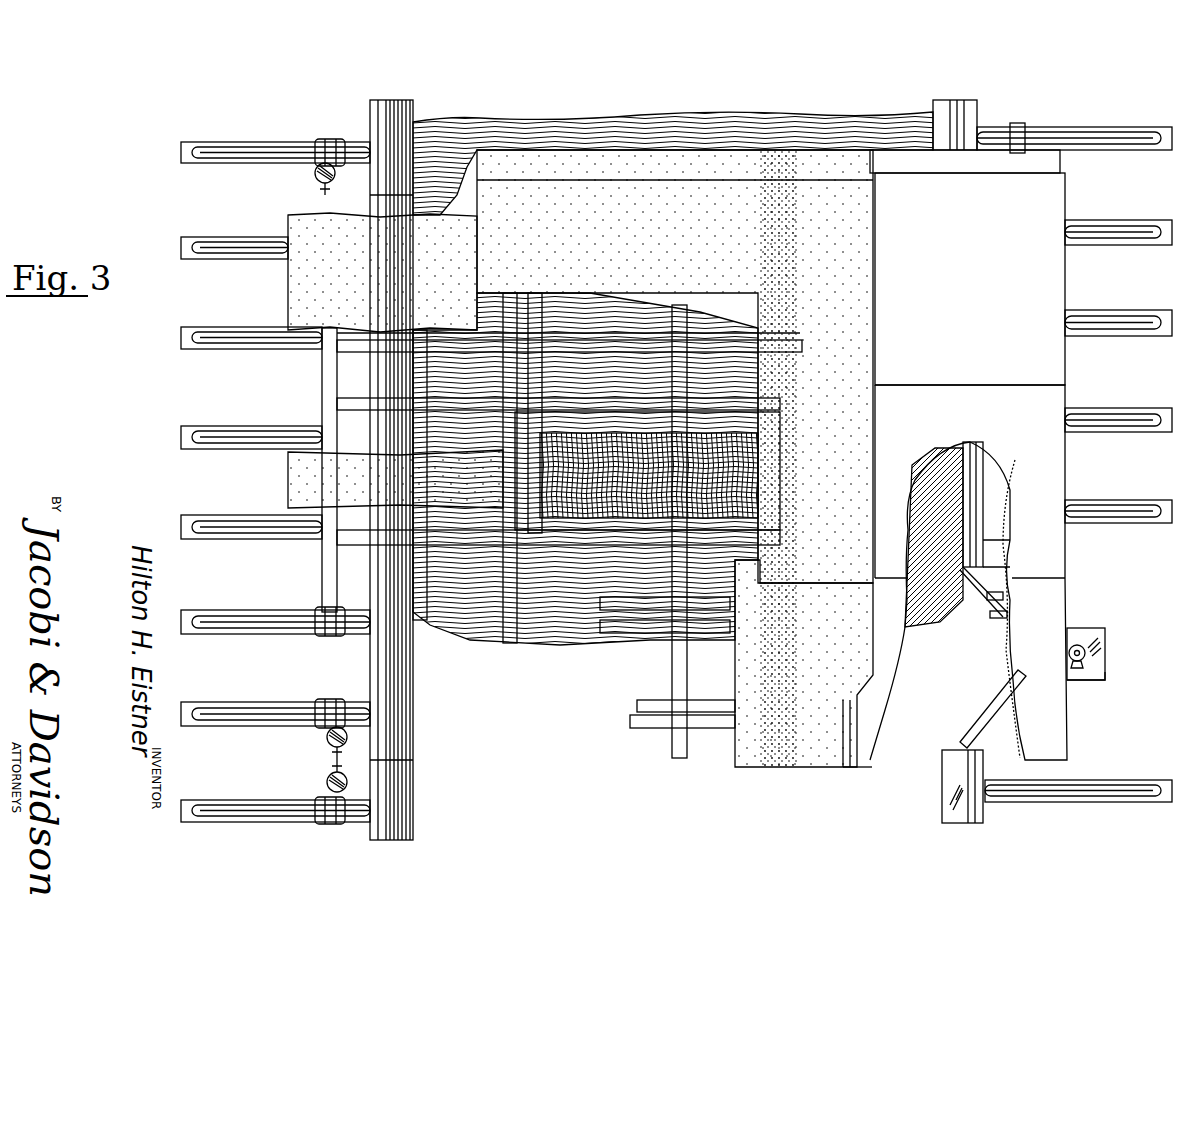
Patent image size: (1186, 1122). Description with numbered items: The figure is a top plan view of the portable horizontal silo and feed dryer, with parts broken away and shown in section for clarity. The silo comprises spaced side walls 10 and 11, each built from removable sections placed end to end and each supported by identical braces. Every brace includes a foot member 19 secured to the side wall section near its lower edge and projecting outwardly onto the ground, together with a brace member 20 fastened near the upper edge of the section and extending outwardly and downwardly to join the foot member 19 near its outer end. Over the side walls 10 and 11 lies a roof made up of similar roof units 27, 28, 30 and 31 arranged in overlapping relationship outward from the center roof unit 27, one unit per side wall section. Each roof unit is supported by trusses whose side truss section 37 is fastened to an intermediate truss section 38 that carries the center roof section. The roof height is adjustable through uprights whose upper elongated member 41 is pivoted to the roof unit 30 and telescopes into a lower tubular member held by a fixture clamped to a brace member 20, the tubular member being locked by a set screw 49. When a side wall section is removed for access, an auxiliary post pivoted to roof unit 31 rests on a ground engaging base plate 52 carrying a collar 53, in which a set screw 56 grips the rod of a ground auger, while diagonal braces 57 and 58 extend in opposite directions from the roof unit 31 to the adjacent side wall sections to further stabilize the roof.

The side wall 10 is at (985, 470).
The side wall 11 is at (372, 658).
The foot member 19 is at (1162, 778).
The brace member 20 is at (1118, 785).
The roof unit 27 is at (1047, 307).
The roof unit 28 is at (893, 160).
The roof unit 30 is at (288, 473).
The roof unit 31 is at (843, 768).
The side truss section 37 is at (440, 347).
The intermediate truss section 38 is at (622, 347).
The upper elongated member 41 is at (327, 782).
The set screw 49 is at (345, 477).
The base plate 52 is at (1100, 653).
The collar 53 is at (1083, 644).
The set screw 56 is at (1090, 682).
The diagonal brace 57 is at (988, 712).
The diagonal brace 58 is at (977, 597).